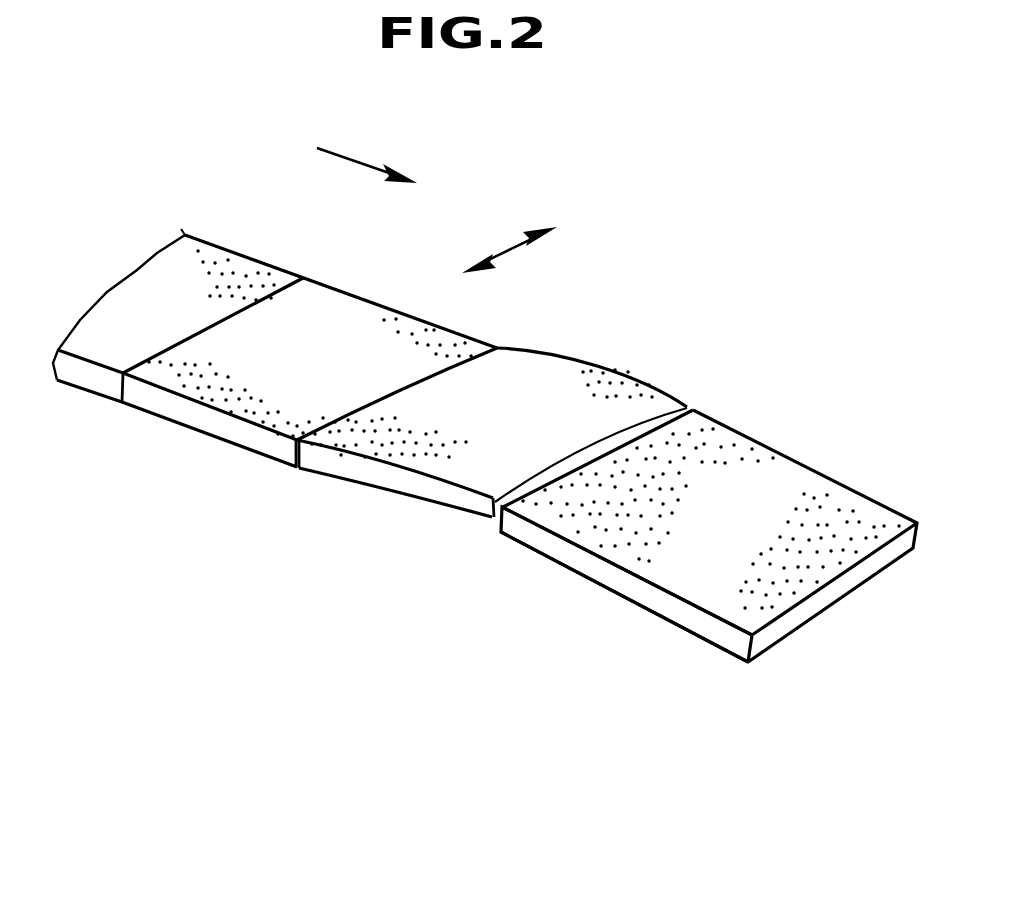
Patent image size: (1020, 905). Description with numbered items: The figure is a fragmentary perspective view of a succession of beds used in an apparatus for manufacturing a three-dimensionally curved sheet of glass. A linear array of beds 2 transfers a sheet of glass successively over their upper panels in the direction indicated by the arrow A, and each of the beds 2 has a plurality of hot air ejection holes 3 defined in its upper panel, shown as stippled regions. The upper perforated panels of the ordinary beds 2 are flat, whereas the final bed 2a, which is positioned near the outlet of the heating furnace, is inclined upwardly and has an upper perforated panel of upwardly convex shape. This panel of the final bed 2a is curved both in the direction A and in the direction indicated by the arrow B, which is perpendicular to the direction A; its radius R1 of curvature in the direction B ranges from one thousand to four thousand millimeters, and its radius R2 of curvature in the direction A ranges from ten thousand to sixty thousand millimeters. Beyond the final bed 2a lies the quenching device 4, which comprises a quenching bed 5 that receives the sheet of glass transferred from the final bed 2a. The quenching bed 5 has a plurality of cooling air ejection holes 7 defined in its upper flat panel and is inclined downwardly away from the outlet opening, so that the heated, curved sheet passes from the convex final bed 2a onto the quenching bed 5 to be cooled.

The beds 2 is at (90, 373).
The final bed 2a is at (410, 483).
The hot air ejection holes 3 is at (248, 282).
The quenching device 4 is at (672, 600).
The quenching bed 5 is at (718, 632).
The cooling air ejection holes 7 is at (837, 505).
The radius of curvature in direction B R1 is at (582, 447).
The radius of curvature in direction A R2 is at (473, 488).
The transfer direction A is at (355, 162).
The transverse direction B is at (509, 221).